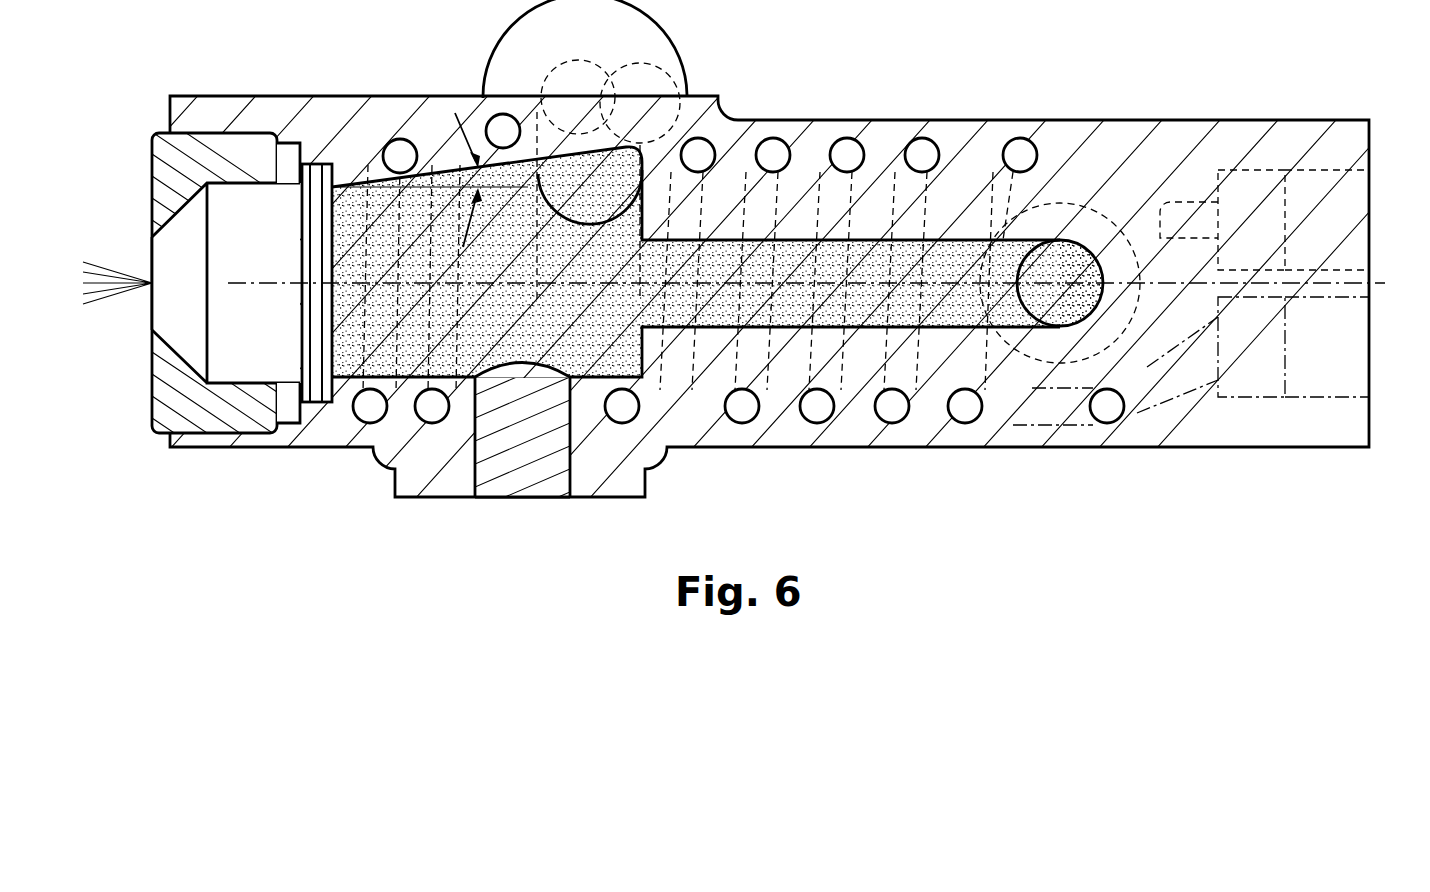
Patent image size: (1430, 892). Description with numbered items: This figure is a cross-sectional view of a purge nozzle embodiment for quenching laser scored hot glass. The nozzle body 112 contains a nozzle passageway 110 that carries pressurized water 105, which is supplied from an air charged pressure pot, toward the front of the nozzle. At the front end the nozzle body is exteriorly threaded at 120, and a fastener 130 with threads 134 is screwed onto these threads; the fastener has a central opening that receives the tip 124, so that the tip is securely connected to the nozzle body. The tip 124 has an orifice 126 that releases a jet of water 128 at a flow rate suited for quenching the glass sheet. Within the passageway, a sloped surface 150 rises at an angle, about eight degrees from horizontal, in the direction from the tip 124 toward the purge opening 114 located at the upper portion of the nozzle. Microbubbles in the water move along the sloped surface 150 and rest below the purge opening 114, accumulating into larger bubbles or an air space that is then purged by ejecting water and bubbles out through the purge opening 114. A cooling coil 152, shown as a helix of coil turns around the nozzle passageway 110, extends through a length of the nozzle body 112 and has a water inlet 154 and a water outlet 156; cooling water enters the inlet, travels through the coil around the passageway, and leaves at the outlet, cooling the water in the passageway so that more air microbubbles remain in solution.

The pressurized water 105 is at (863, 263).
The nozzle passageway 110 is at (600, 377).
The nozzle body 112 is at (1122, 145).
The purge opening 114 is at (655, 66).
The exterior threads 120 is at (243, 134).
The tip 124 is at (287, 207).
The orifice 126 is at (152, 286).
The jet of water 128 is at (114, 283).
The fastener 130 is at (200, 163).
The threads 134 is at (187, 135).
The sloped surface 150 is at (486, 126).
The cooling coil 152 is at (1032, 158).
The water inlet 154 is at (1317, 170).
The water outlet 156 is at (1325, 293).